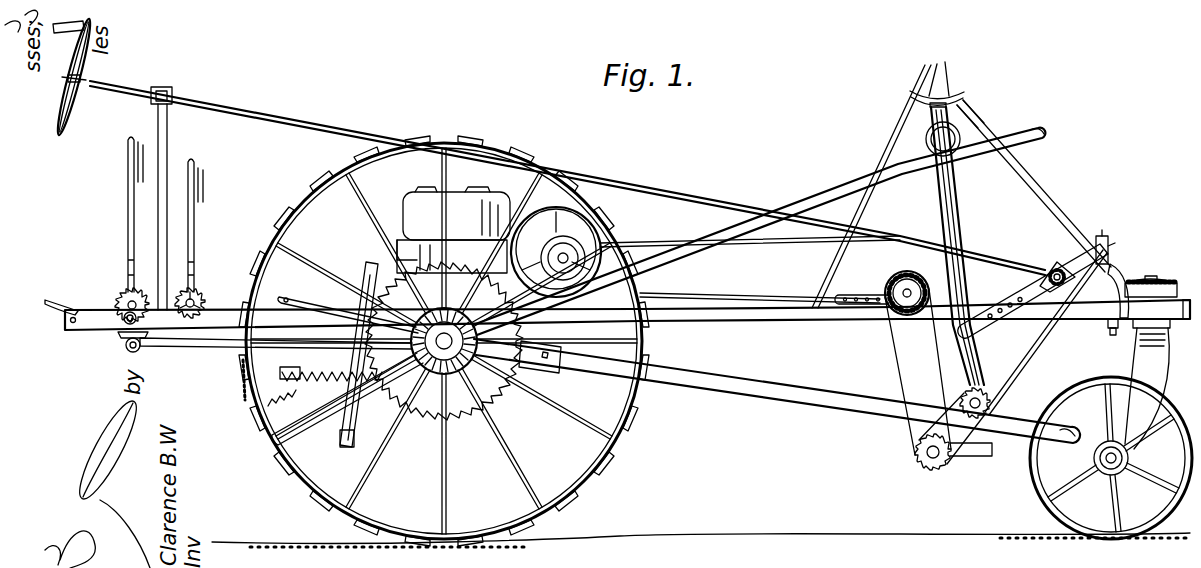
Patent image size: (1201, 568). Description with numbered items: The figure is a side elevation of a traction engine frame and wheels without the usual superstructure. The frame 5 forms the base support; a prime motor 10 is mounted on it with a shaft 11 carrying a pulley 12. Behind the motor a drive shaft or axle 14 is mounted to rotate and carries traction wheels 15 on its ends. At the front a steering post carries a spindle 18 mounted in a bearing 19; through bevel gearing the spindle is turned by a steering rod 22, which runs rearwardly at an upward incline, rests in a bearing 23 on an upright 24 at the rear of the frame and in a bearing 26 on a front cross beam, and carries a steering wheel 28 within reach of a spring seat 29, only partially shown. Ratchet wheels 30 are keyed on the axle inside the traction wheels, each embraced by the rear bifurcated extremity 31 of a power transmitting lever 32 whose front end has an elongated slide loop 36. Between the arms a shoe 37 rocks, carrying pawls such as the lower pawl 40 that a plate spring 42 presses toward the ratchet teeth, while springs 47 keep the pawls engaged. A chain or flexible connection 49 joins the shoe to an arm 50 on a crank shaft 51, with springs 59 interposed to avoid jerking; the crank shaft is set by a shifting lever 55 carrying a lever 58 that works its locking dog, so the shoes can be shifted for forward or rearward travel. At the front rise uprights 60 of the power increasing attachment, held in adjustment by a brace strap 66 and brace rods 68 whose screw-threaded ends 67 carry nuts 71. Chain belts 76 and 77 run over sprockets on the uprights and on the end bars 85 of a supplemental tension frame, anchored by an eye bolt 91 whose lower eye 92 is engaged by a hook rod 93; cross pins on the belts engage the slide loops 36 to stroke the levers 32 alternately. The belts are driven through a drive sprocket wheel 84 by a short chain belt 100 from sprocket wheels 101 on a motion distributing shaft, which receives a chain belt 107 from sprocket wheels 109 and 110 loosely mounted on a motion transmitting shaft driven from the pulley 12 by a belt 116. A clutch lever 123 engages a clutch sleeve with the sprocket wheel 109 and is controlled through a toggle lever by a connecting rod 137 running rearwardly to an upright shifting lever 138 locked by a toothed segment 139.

The frame 5 is at (736, 321).
The prime motor 10 is at (462, 213).
The shaft 11 is at (610, 243).
The pulley 12 is at (583, 200).
The drive shaft or axle 14 is at (417, 411).
The traction wheels 15 is at (607, 463).
The spindle 18 is at (1151, 280).
The bearing 19 is at (1172, 324).
The steering rod 22 is at (631, 191).
The bearing 23 is at (168, 94).
The upright 24 is at (169, 152).
The bearing 26 is at (1120, 291).
The steering wheel 28 is at (77, 117).
The spring seat 29 is at (52, 300).
The ratchet wheels 30 is at (489, 388).
The rear bifurcated extremity 31 is at (343, 411).
The power transmitting lever 32 is at (712, 244).
The elongated slide loop 36 is at (1033, 133).
The shoe 37 is at (343, 297).
The pawl 40 is at (349, 448).
The plate spring 42 is at (358, 414).
The springs 47 is at (330, 374).
The chain or flexible connection 49 is at (240, 376).
The arm 50 is at (175, 341).
The crank shaft 51 is at (127, 351).
The shifting lever 55 is at (128, 222).
The lever 58 is at (116, 296).
The springs 59 is at (291, 388).
The uprights 60 is at (955, 223).
The brace strap 66 is at (968, 113).
The screw-threaded ends 67 is at (941, 70).
The brace rods 68 is at (870, 209).
The nuts 71 is at (960, 96).
The chain belt 76 is at (1027, 494).
The chain belt 77 is at (1145, 363).
The drive sprocket wheel 84 is at (1008, 380).
The end bars 85 is at (1018, 318).
The eye bolt 91 is at (1106, 241).
The lower eye 92 is at (1093, 301).
The hook rod 93 is at (1114, 325).
The short chain belts 100 is at (915, 442).
The sprocket wheels 101 is at (918, 453).
The chain belt 107 is at (892, 342).
The sprocket wheel 109 is at (892, 273).
The sprocket wheel 110 is at (912, 275).
The belt 116 is at (762, 256).
The clutch lever 123 is at (893, 306).
The connecting rod 137 is at (735, 303).
The upright shifting lever 138 is at (195, 241).
The toothed segment 139 is at (200, 291).